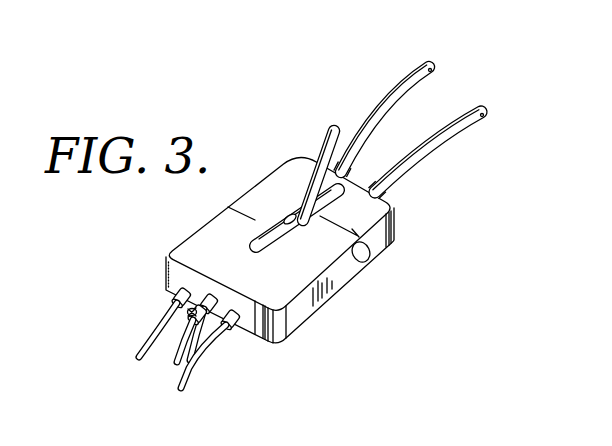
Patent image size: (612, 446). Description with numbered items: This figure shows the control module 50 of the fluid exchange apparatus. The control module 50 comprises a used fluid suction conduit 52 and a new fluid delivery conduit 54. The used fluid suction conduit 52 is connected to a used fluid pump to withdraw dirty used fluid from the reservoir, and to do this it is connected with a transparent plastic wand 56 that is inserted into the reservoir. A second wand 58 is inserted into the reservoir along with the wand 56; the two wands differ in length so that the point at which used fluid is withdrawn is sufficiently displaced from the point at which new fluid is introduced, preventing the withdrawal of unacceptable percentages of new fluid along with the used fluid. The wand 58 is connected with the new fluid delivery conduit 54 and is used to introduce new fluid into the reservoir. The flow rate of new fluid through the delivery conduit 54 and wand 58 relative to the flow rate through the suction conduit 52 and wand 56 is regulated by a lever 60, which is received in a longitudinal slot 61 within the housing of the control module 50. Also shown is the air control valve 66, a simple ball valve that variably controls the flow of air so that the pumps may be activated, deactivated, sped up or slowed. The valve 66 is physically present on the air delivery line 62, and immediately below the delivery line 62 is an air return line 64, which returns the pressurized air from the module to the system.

The control module 50 is at (387, 297).
The used fluid suction conduit 52 is at (143, 350).
The new fluid delivery conduit 54 is at (193, 377).
The transparent plastic wand 56 is at (452, 147).
The wand 58 is at (394, 82).
The lever 60 is at (331, 131).
The longitudinal slot 61 is at (287, 213).
The air delivery line 62 is at (180, 338).
The air return line 64 is at (203, 366).
The air control valve 66 is at (188, 311).